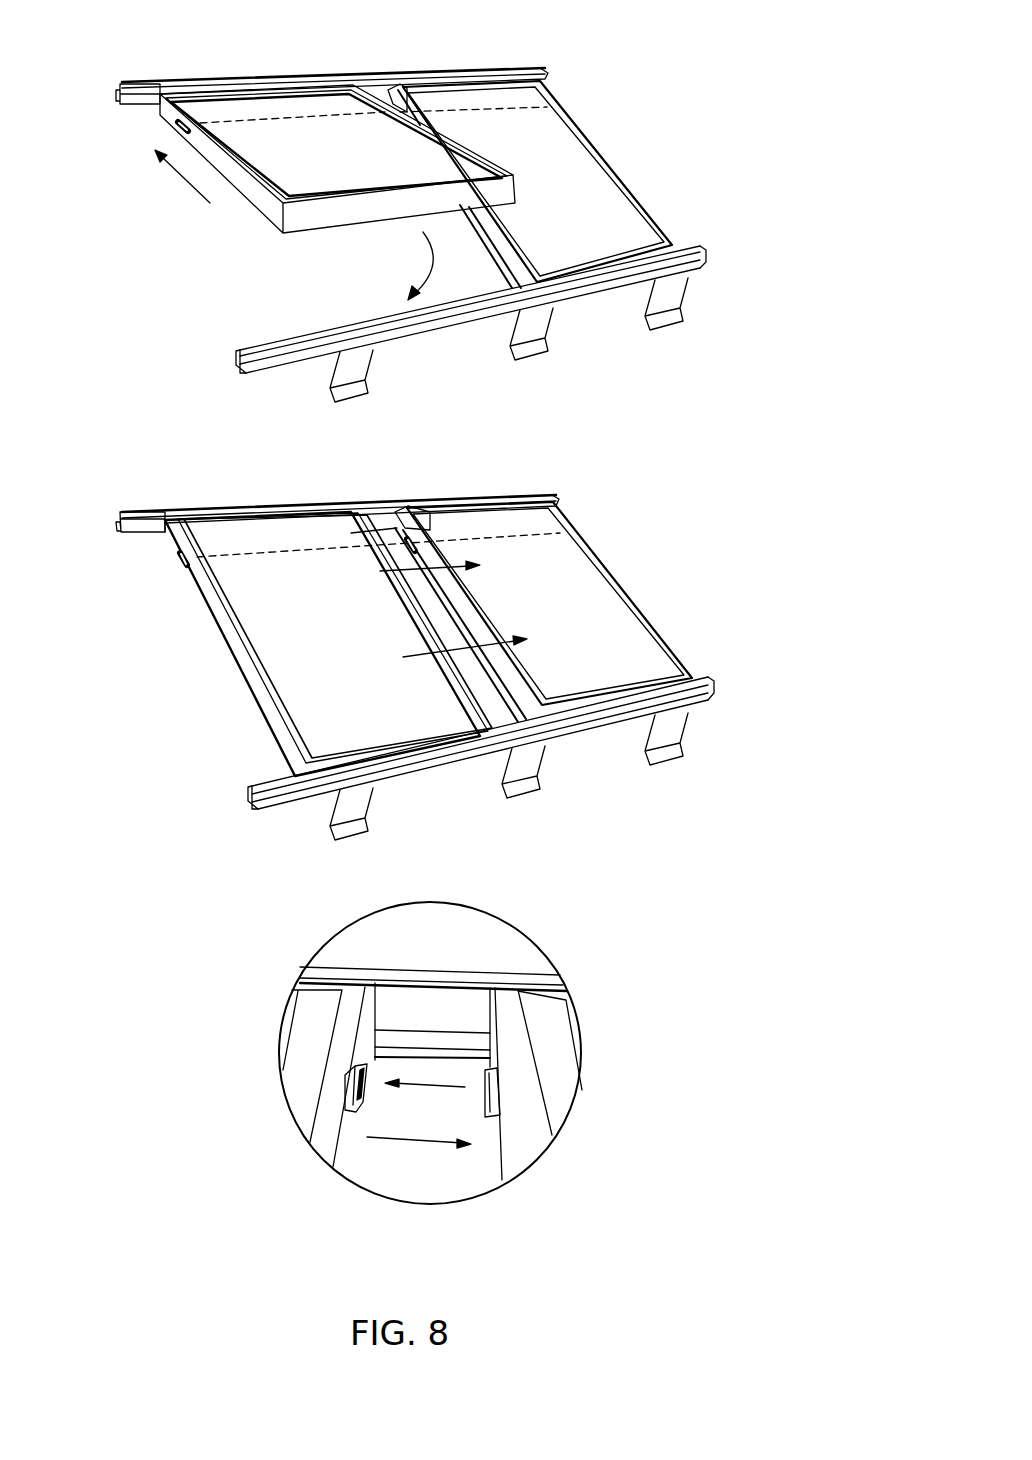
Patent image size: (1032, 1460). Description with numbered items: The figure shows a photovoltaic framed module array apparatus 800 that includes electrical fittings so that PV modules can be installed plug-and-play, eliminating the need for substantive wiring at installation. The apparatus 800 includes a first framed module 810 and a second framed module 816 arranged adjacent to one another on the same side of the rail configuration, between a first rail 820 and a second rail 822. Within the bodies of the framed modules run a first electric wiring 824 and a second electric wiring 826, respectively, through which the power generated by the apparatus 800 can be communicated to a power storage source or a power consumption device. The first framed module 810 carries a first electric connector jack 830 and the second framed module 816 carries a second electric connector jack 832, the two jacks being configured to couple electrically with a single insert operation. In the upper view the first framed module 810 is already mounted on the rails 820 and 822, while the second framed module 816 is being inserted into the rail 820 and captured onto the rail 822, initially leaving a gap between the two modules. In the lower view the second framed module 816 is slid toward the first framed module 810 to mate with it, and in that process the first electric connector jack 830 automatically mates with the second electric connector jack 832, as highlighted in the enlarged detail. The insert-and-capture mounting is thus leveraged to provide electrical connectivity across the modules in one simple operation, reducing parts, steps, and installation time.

The photovoltaic framed module array apparatus 800 is at (705, 80).
The first framed module 810 is at (570, 242).
The second framed module 816 is at (323, 103).
The first rail 820 is at (255, 372).
The second rail 822 is at (128, 82).
The first electric wiring 824 is at (503, 107).
The second electric wiring 826 is at (223, 120).
The first electric connector jack 830 is at (413, 528).
The second electric connector jack 832 is at (350, 1088).